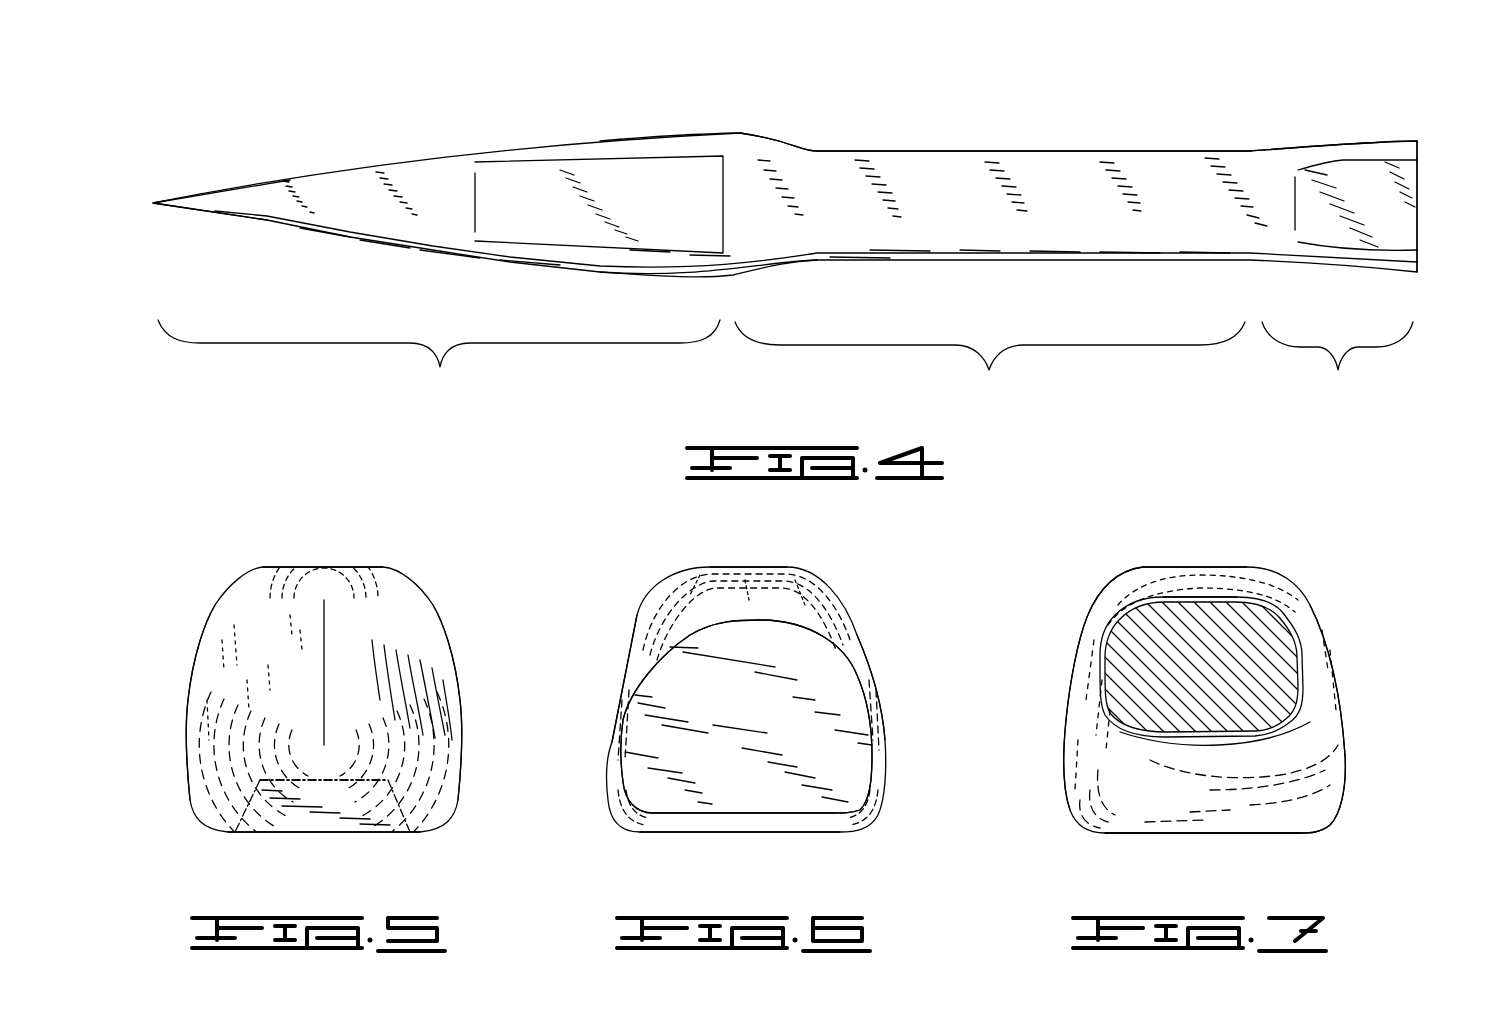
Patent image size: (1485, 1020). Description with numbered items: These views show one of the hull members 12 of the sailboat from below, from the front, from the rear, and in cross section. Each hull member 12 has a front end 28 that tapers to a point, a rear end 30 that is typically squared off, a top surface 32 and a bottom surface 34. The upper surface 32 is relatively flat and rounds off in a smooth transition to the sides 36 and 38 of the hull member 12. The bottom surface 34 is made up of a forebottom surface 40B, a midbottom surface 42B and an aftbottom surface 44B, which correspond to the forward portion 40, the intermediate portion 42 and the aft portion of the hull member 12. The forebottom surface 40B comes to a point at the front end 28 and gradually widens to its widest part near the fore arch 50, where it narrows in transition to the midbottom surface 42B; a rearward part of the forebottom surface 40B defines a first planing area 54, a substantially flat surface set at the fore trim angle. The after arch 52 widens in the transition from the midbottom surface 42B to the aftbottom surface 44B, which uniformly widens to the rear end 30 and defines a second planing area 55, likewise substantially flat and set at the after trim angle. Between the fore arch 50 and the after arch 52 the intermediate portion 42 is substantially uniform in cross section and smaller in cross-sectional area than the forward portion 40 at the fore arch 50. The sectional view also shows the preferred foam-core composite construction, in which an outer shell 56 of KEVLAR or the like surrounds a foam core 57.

In FIG. 4, the hull member 12 is at (318, 95).
In FIG. 5, the hull member 12 is at (183, 540).
In FIG. 6, the hull member 12 is at (886, 582).
In FIG. 7, the hull member 12 is at (1257, 521).
In FIG. 4, the front end 28 is at (153, 203).
In FIG. 5, the front end 28 is at (324, 670).
In FIG. 4, the rear end 30 is at (1418, 175).
In FIG. 6, the rear end 30 is at (768, 730).
In FIG. 5, the top surface 32 is at (325, 565).
In FIG. 6, the top surface 32 is at (728, 565).
In FIG. 7, the top surface 32 is at (1160, 567).
In FIG. 4, the bottom surface 34 is at (835, 193).
In FIG. 5, the bottom surface 34 is at (353, 833).
In FIG. 6, the bottom surface 34 is at (728, 833).
In FIG. 7, the bottom surface 34 is at (1225, 835).
In FIG. 4, the side 36 is at (690, 133).
In FIG. 5, the side 36 is at (460, 685).
In FIG. 6, the side 36 is at (610, 745).
In FIG. 7, the side 36 is at (1065, 716).
In FIG. 4, the side 38 is at (688, 275).
In FIG. 5, the side 38 is at (190, 685).
In FIG. 6, the side 38 is at (886, 733).
In FIG. 7, the side 38 is at (1342, 710).
In FIG. 7, the forward portion 40 is at (1098, 589).
In FIG. 7, the intermediate portion 42 is at (1230, 592).
In FIG. 4, the fore arch 50 is at (770, 197).
In FIG. 7, the fore arch 50 is at (1225, 800).
In FIG. 4, the after arch 52 is at (1257, 195).
In FIG. 4, the first planing area 54 is at (560, 195).
In FIG. 5, the first planing area 54 is at (282, 813).
In FIG. 4, the second planing area 55 is at (1362, 193).
In FIG. 7, the outer shell 56 is at (1283, 620).
In FIG. 7, the foam core 57 is at (1240, 672).
In FIG. 4, the forebottom surface 40B is at (439, 359).
In FIG. 4, the midbottom surface 42B is at (990, 361).
In FIG. 4, the aftbottom surface 44B is at (1337, 361).